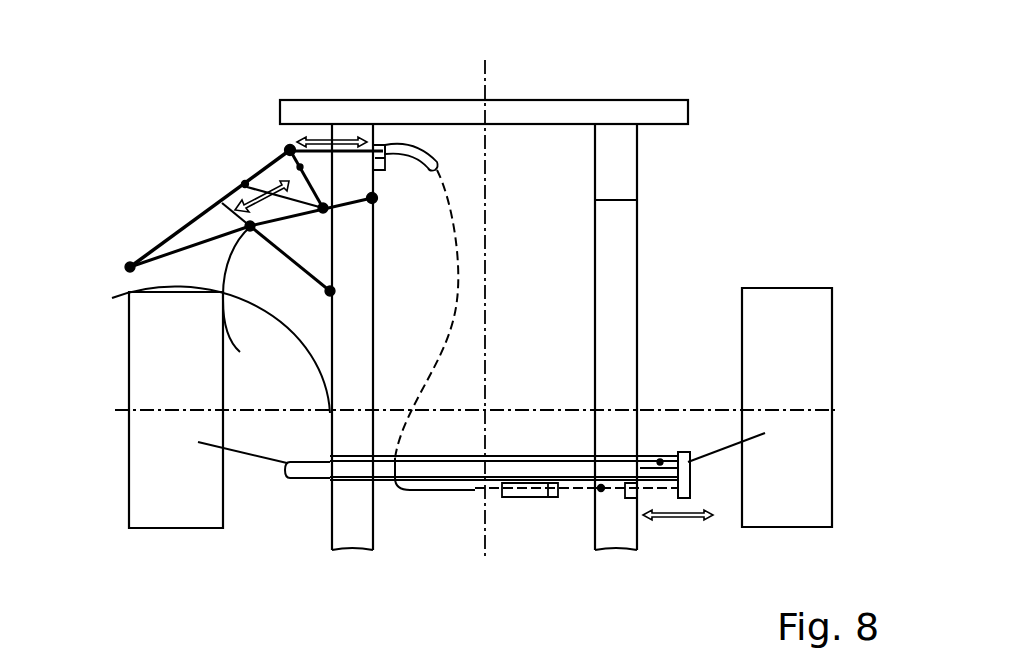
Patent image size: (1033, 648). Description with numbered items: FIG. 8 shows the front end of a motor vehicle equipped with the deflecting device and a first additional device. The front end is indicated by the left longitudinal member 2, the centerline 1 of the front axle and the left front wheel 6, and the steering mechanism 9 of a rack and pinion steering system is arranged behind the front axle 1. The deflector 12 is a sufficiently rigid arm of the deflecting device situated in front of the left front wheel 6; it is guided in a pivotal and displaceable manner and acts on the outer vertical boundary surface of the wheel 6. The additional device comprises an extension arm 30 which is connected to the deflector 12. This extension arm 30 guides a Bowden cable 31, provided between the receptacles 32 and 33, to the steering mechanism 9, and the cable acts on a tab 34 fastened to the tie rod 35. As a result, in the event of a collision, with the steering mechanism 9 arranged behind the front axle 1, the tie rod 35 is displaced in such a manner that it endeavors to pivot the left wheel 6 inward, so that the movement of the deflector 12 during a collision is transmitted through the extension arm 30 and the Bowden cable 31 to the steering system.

The centerline of the front axle 1 is at (242, 397).
The left longitudinal member 2 is at (352, 247).
The left front wheel 6 is at (163, 443).
The steering mechanism 9 is at (468, 467).
The deflector 12 is at (200, 215).
The extension arm 30 is at (290, 150).
The guide path 31 is at (450, 217).
The receptacle 32 is at (380, 146).
The receptacle 33 is at (553, 495).
The tab 34 is at (688, 463).
The tie rod 35 is at (660, 462).